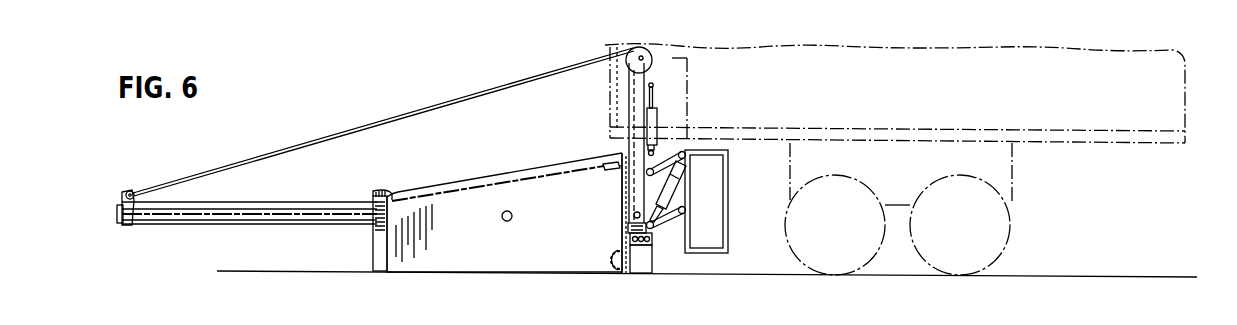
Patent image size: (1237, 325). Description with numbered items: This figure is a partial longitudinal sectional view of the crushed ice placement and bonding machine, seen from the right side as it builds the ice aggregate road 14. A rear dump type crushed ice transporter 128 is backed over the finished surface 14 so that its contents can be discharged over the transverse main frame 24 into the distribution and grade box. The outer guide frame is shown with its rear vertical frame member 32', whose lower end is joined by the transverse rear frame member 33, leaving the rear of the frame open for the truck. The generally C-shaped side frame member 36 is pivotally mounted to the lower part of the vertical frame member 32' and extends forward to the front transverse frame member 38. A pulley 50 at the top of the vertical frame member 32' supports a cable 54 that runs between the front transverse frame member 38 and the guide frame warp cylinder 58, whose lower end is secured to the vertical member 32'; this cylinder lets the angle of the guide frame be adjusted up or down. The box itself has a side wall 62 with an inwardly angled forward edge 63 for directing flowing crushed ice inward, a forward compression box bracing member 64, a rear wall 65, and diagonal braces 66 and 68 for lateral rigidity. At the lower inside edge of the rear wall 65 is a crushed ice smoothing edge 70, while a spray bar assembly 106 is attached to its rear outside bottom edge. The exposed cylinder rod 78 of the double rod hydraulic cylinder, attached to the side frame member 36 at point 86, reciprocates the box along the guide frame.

The ice aggregate road 14 is at (438, 273).
The main frame 24 is at (728, 237).
The rear vertical frame member 32' is at (656, 143).
The transverse rear frame member 33 is at (628, 233).
The side frame member 36 is at (230, 226).
The front transverse frame member 38 is at (123, 222).
The pulley 50 is at (627, 46).
The cable 54 is at (343, 133).
The guide frame warp cylinder 58 is at (662, 120).
The side wall 62 is at (440, 180).
The inwardly angled edge 63 is at (373, 248).
The forward compression box bracing member 64 is at (377, 198).
The rear wall 65 is at (623, 212).
The diagonal brace 66 is at (458, 195).
The diagonal brace 68 is at (560, 177).
The crushed ice smoothing edge 70 is at (616, 268).
The cylinder rod 78 is at (287, 218).
The rod attachment point 86 is at (121, 212).
The spray bar assembly 106 is at (655, 262).
The crushed ice transporter 128 is at (1047, 143).